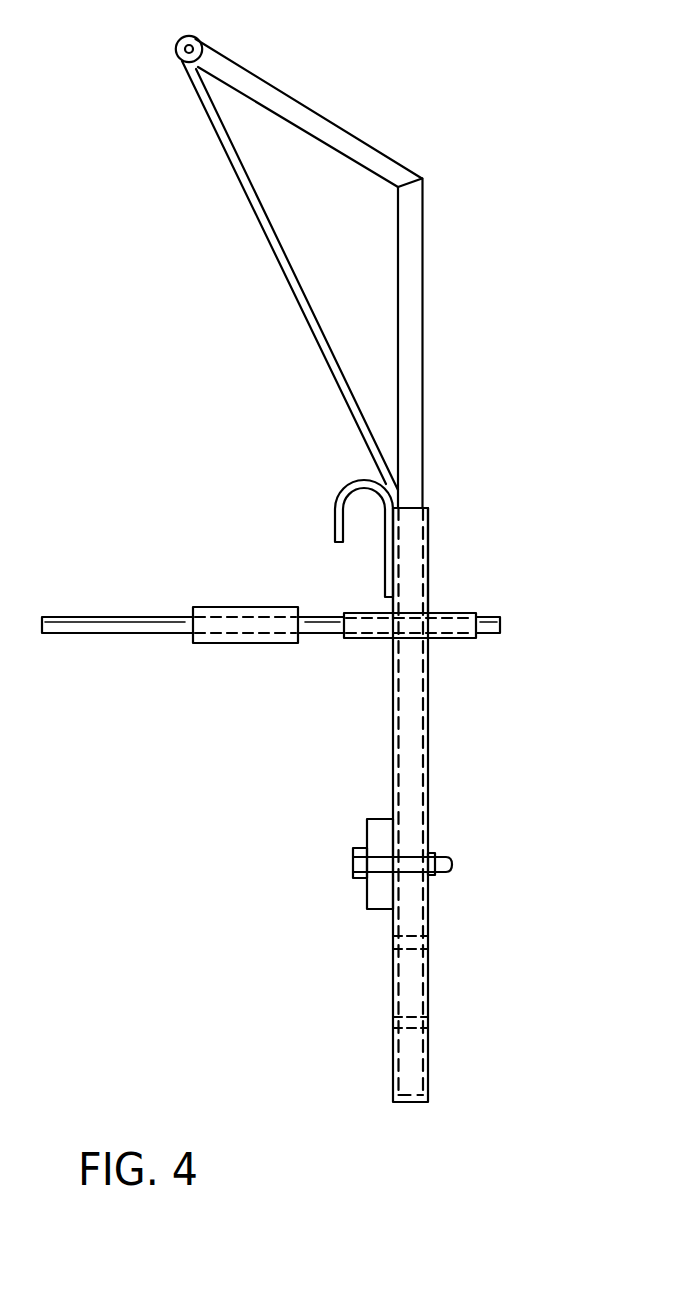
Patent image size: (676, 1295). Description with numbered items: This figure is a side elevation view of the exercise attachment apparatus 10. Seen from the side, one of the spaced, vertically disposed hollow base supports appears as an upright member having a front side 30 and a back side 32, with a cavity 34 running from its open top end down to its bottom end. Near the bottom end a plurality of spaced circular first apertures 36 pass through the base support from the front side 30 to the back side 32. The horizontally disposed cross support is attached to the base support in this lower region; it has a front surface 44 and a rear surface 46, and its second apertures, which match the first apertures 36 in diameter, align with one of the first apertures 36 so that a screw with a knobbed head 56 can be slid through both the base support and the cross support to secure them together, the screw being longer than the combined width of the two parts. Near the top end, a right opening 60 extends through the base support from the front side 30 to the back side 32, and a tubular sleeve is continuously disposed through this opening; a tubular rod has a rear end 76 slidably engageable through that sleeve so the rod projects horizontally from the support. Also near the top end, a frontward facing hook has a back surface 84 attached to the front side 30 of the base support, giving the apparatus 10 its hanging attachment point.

The exercise attachment apparatus 10 is at (528, 83).
The front side 30 is at (393, 727).
The back side 32 is at (428, 727).
The cavity 34 is at (428, 555).
The first apertures 36 is at (413, 945).
The front surface 44 is at (367, 900).
The rear surface 46 is at (395, 892).
The knobbed head 56 is at (353, 862).
The right opening 60 is at (410, 636).
The rear end 76 is at (500, 623).
The back surface 84 is at (395, 542).